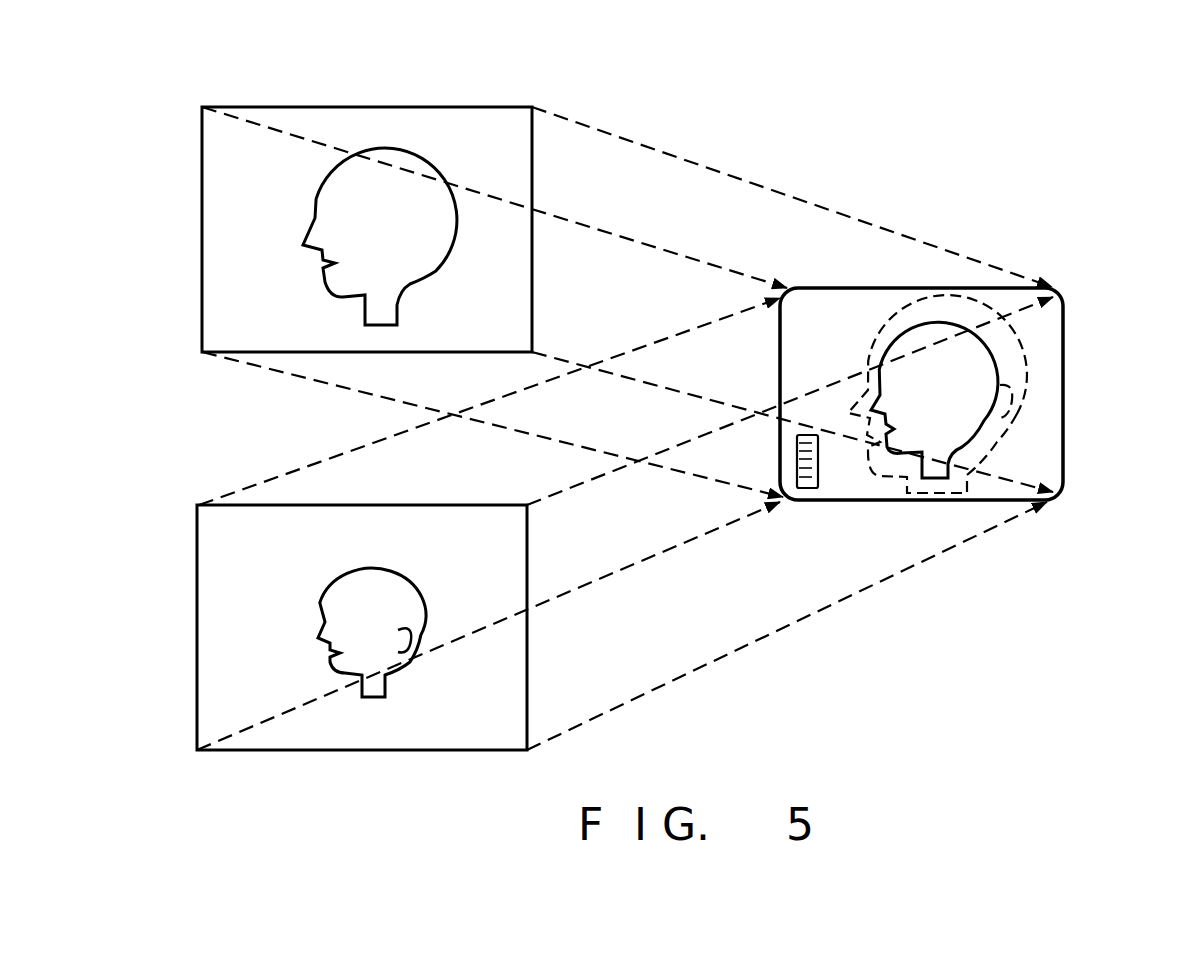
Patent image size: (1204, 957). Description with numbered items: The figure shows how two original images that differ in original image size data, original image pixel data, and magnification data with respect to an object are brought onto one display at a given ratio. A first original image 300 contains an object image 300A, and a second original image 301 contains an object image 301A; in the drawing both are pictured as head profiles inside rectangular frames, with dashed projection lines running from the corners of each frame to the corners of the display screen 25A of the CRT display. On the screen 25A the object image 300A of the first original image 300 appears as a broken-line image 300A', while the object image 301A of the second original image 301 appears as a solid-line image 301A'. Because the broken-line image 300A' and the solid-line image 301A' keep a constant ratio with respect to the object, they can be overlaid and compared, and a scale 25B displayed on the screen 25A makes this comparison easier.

The first original image 300 is at (367, 201).
The object image 300A is at (453, 187).
The second original image 301 is at (362, 601).
The object image 301A is at (408, 652).
The display screen 25A is at (978, 394).
The broken-line image 300A' is at (1022, 396).
The solid-line image 301A' is at (1012, 394).
The scale 25B is at (818, 468).